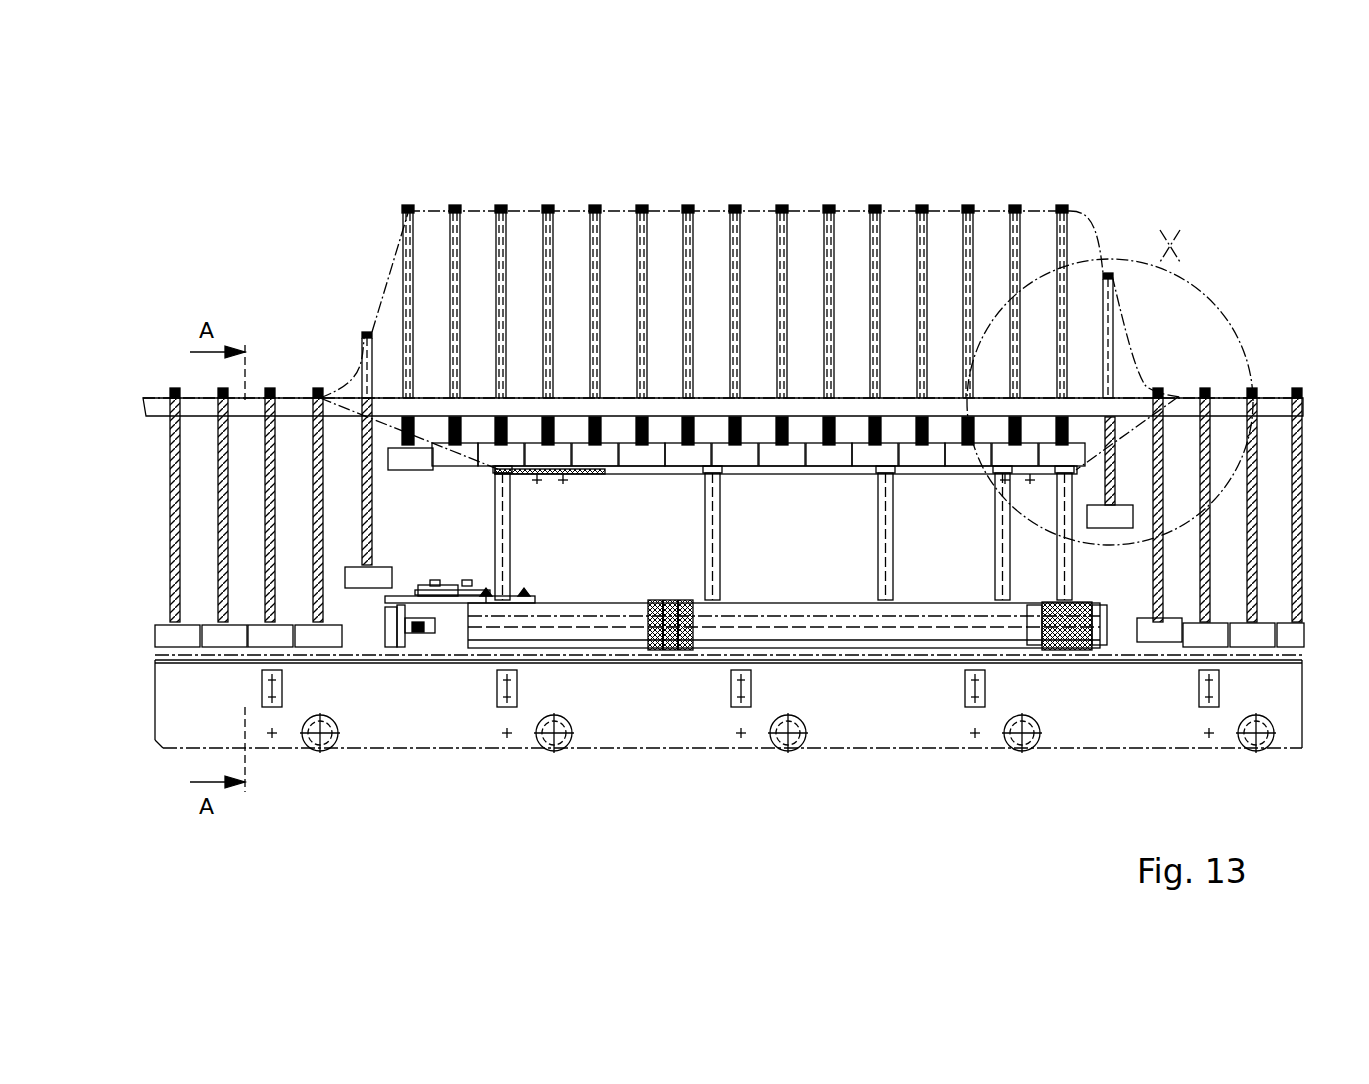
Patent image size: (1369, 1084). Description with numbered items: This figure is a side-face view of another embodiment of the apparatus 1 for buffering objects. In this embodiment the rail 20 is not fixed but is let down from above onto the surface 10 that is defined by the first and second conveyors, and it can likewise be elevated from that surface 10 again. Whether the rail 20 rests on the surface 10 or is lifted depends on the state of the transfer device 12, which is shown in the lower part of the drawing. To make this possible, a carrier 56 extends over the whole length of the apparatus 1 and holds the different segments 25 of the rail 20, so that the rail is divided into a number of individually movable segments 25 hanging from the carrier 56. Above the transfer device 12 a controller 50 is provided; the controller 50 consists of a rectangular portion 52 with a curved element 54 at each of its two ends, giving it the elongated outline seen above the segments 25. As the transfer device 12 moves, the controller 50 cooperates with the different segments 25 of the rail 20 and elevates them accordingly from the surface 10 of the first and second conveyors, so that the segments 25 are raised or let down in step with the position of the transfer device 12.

The apparatus for buffering objects 1 is at (372, 208).
The surface 10 is at (348, 645).
The transfer device 12 is at (878, 513).
The rail 20 is at (254, 605).
The segments 25 is at (829, 243).
The controller 50 is at (705, 225).
The rectangular portion 52 is at (627, 243).
The curved element 54 is at (386, 298).
The carrier 56 is at (193, 400).